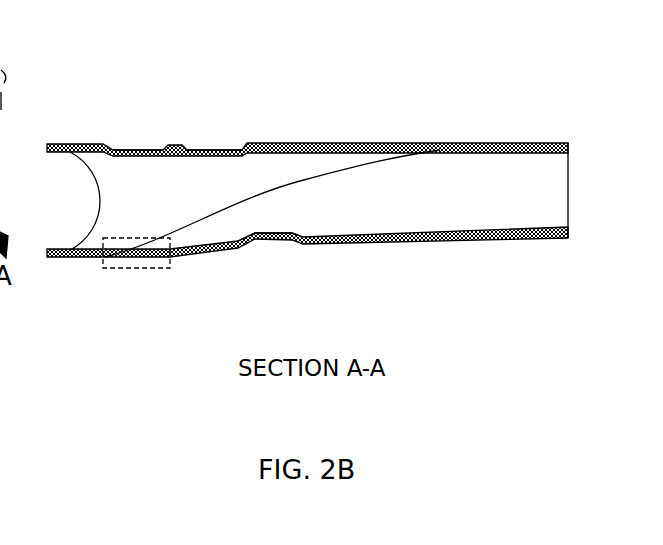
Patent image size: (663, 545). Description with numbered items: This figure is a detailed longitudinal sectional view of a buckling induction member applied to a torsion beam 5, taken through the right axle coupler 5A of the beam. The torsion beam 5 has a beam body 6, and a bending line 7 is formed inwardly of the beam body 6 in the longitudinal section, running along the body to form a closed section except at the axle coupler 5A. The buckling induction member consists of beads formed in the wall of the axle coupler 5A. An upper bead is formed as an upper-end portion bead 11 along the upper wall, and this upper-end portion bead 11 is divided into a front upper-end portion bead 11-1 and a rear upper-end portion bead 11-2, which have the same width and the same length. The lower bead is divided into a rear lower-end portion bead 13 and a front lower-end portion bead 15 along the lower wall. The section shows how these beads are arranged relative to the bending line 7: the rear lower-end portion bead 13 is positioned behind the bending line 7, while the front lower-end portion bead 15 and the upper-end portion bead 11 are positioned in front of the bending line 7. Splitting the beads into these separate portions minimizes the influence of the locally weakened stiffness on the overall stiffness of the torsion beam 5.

The torsion beam 5 is at (307, 147).
The beam body 6 is at (398, 143).
The bending line 7 is at (365, 172).
The right axle coupler 5A is at (115, 198).
The upper-end portion bead 11 is at (173, 90).
The front upper-end portion bead 11-1 is at (132, 150).
The rear upper-end portion bead 11-2 is at (217, 121).
The rear lower-end portion bead 13 is at (277, 238).
The front lower-end portion bead 15 is at (146, 270).